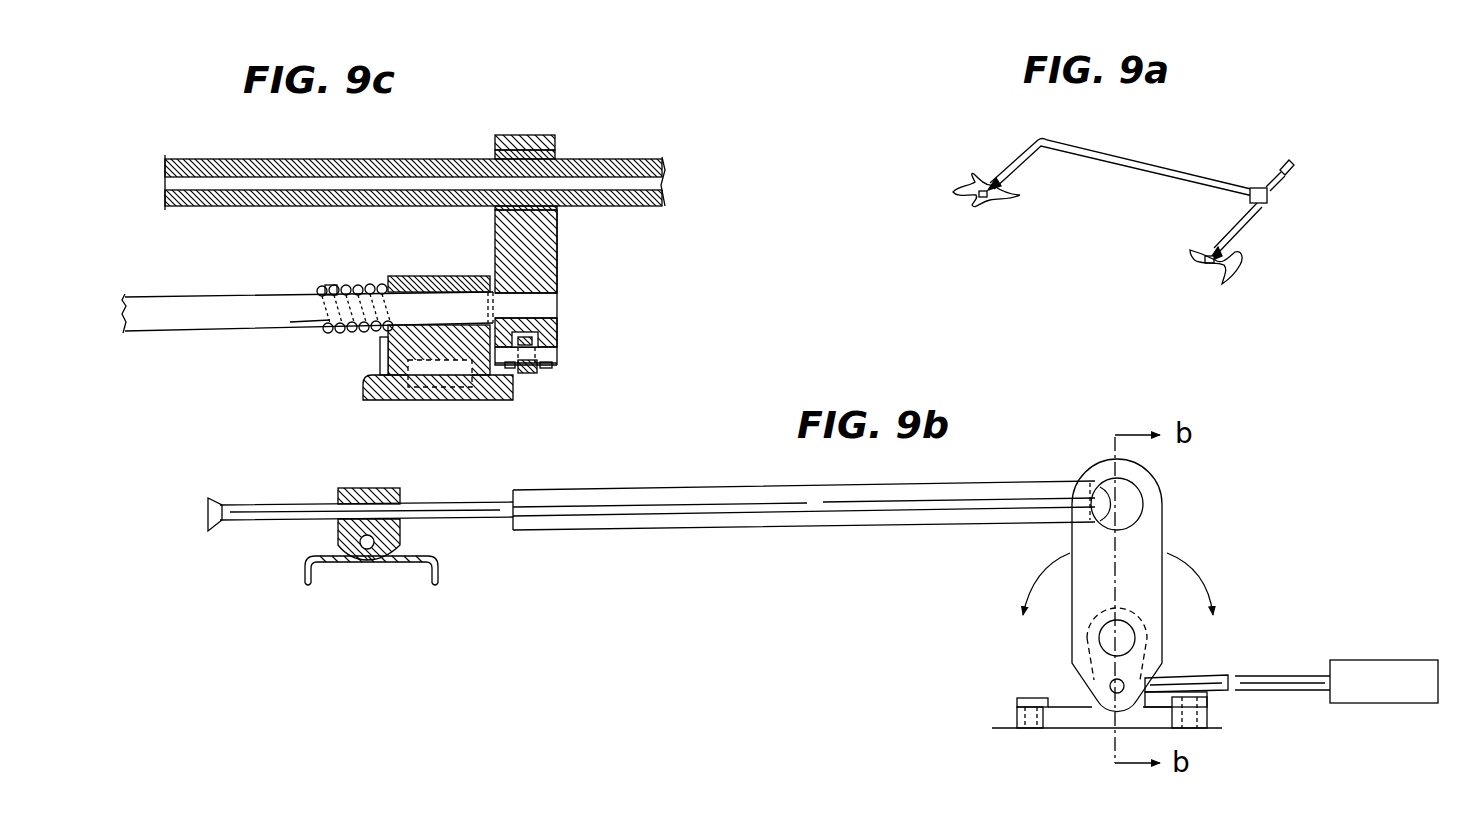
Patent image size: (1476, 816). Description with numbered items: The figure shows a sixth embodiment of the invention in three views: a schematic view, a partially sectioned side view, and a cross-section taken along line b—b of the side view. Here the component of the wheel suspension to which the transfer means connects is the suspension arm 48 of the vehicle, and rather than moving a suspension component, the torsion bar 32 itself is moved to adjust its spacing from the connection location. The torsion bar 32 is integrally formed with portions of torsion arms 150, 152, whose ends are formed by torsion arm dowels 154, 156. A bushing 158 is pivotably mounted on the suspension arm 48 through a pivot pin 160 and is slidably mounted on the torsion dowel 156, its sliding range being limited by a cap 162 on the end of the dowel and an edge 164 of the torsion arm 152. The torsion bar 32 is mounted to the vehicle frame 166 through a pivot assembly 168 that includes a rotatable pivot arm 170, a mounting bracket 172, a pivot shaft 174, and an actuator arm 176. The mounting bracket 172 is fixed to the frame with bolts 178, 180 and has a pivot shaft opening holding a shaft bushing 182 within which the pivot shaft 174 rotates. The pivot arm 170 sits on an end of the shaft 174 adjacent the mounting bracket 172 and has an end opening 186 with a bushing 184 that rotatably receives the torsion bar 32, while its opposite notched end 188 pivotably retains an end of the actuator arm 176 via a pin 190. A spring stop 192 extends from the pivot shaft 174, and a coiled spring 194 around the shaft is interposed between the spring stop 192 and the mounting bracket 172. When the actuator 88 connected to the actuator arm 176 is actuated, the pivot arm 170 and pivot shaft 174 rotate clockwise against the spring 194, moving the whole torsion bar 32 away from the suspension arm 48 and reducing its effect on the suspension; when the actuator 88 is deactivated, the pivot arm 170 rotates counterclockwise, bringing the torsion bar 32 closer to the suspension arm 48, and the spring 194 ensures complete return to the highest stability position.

In FIG. 9c, the torsion bar 32 is at (636, 158).
In FIG. 9a, the torsion bar 32 is at (1138, 160).
In FIG. 9a, the suspension arm 48 is at (1224, 276).
In FIG. 9b, the suspension arm 48 is at (305, 577).
In FIG. 9a, the actuator 88 is at (1294, 167).
In FIG. 9b, the actuator 88 is at (1385, 668).
In FIG. 9a, the torsion arm 150 is at (1020, 150).
In FIG. 9a, the torsion arm 152 is at (1244, 224).
In FIG. 9b, the torsion arm 152 is at (626, 491).
In FIG. 9a, the torsion arm dowel 154 is at (979, 203).
In FIG. 9a, the torsion arm dowel 156 is at (1206, 263).
In FIG. 9b, the torsion arm dowel 156 is at (268, 516).
In FIG. 9a, the bushing 158 is at (1212, 250).
In FIG. 9b, the bushing 158 is at (350, 488).
In FIG. 9b, the pivot pin 160 is at (400, 542).
In FIG. 9b, the cap 162 is at (206, 506).
In FIG. 9b, the edge 164 is at (512, 492).
In FIG. 9c, the frame 166 is at (436, 400).
In FIG. 9b, the frame 166 is at (1008, 727).
In FIG. 9a, the pivot assembly 168 is at (1257, 188).
In FIG. 9b, the pivot assembly 168 is at (1230, 562).
In FIG. 9c, the pivot arm 170 is at (557, 208).
In FIG. 9b, the pivot arm 170 is at (1162, 535).
In FIG. 9c, the mounting bracket 172 is at (452, 276).
In FIG. 9b, the mounting bracket 172 is at (1057, 730).
In FIG. 9c, the pivot shaft 174 is at (178, 331).
In FIG. 9b, the pivot shaft 174 is at (1134, 646).
In FIG. 9c, the actuator arm 176 is at (527, 374).
In FIG. 9b, the actuator arm 176 is at (1180, 677).
In FIG. 9b, the bolt 178 is at (1023, 697).
In FIG. 9b, the bolt 180 is at (1205, 695).
In FIG. 9c, the shaft bushing 182 is at (392, 276).
In FIG. 9c, the bushing 184 is at (494, 150).
In FIG. 9c, the end opening 186 is at (560, 157).
In FIG. 9c, the notched end 188 is at (548, 368).
In FIG. 9c, the pin 190 is at (557, 350).
In FIG. 9c, the spring stop 192 is at (328, 285).
In FIG. 9c, the coiled spring 194 is at (346, 286).